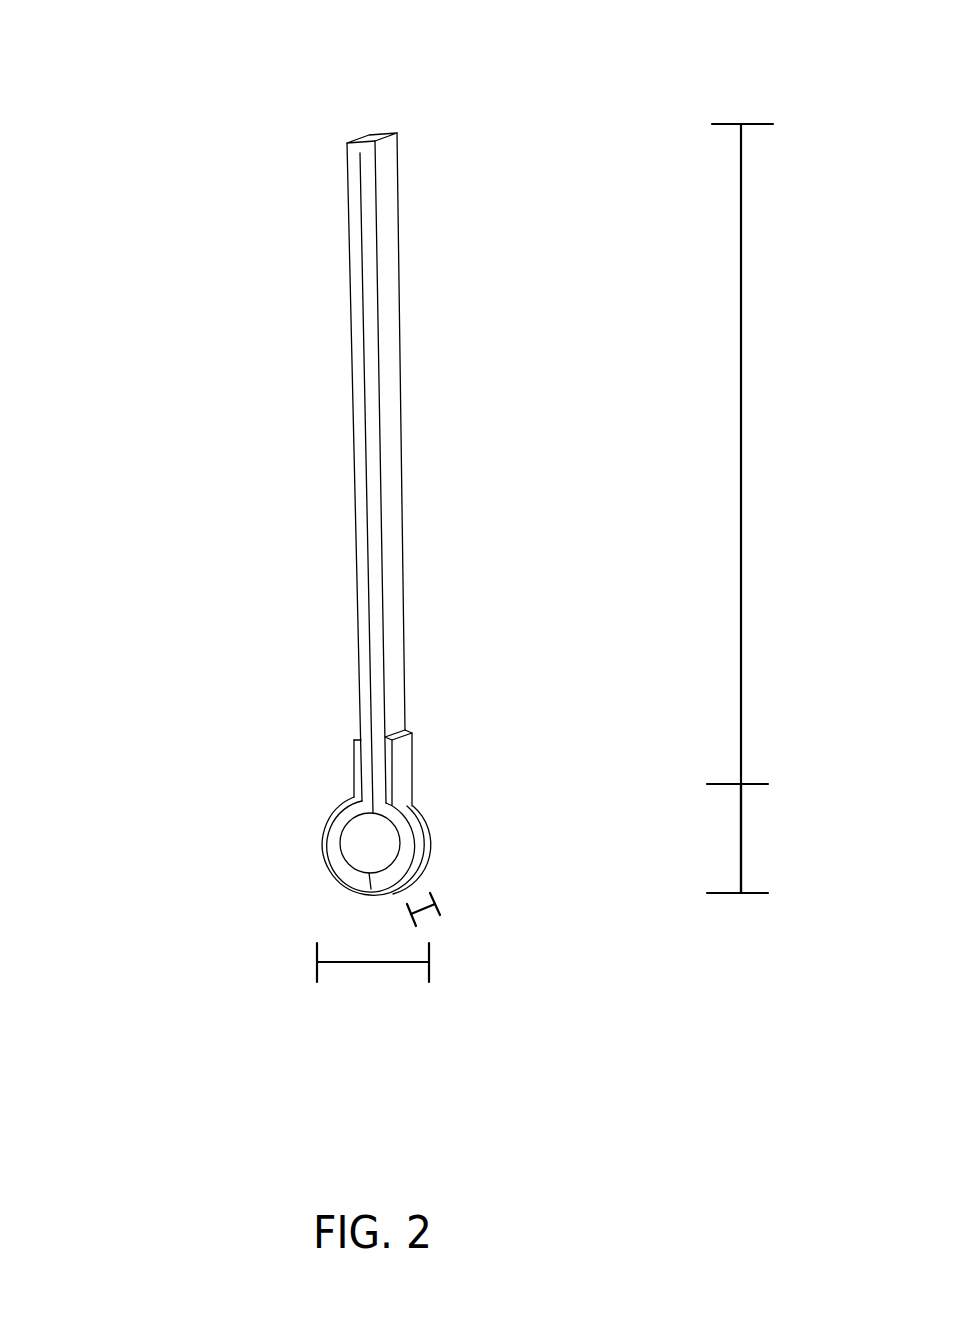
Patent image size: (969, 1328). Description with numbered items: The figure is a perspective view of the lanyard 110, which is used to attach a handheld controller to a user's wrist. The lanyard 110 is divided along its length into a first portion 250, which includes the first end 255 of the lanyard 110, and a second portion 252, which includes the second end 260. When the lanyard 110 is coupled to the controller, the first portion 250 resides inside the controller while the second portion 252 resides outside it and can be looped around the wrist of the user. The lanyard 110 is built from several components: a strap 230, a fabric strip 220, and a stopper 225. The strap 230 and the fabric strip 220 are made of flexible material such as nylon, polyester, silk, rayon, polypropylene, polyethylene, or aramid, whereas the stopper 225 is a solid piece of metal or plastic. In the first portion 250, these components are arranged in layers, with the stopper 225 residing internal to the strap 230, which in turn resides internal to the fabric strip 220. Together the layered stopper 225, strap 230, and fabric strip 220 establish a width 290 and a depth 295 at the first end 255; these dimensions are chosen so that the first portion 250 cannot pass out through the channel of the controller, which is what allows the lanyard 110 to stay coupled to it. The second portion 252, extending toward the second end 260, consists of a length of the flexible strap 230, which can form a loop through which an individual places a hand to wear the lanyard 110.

The lanyard 110 is at (68, 26).
The strap 230 is at (392, 432).
The second end 260 is at (383, 127).
The fabric strip 220 is at (398, 795).
The stopper 225 is at (362, 840).
The first end 255 is at (367, 893).
The second portion 252 is at (762, 472).
The first portion 250 is at (753, 835).
The width 290 is at (385, 975).
The depth 295 is at (433, 917).